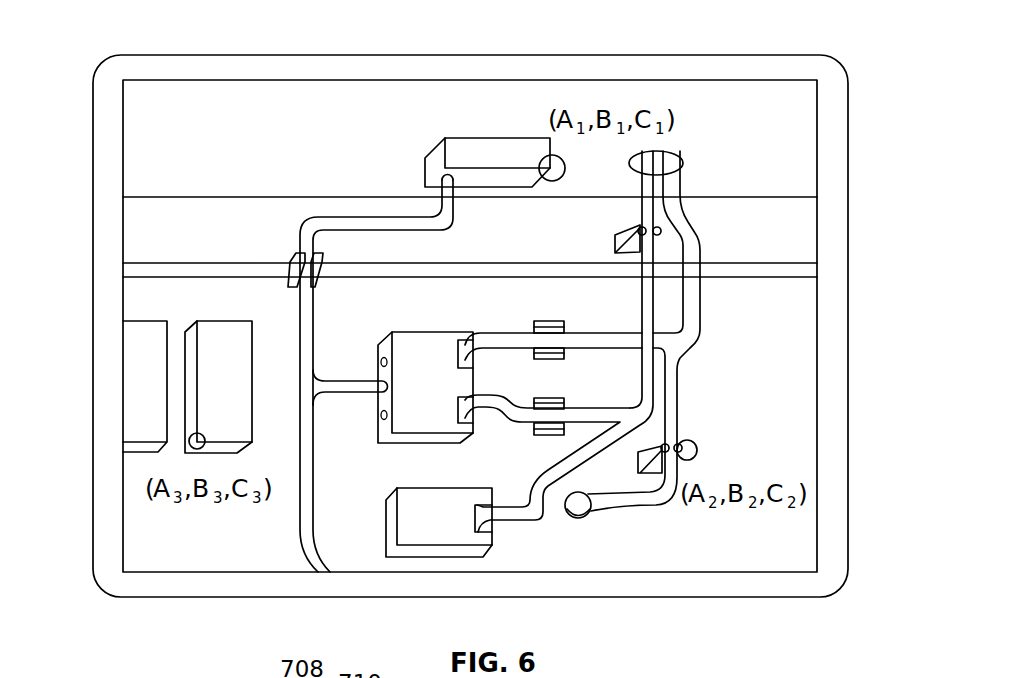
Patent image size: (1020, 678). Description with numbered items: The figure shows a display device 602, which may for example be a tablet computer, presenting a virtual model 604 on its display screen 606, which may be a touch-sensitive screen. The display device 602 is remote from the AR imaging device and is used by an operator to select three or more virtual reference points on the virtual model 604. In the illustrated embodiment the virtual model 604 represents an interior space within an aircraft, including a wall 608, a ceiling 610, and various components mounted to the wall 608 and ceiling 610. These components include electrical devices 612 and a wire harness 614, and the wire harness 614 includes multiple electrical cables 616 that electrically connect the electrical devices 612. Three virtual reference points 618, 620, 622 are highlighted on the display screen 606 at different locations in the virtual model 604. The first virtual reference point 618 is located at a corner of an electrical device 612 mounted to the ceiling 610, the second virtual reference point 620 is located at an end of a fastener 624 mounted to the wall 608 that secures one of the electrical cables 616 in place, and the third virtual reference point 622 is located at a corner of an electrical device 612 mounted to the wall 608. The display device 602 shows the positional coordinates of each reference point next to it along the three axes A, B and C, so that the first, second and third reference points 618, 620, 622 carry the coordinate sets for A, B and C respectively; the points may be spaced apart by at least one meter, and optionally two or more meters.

The display device 602 is at (168, 55).
The virtual model 604 is at (692, 155).
The display screen 606 is at (150, 107).
The wall 608 is at (775, 348).
The ceiling 610 is at (790, 128).
The electrical device 612 is at (475, 150).
The wire harness 614 is at (705, 320).
The electrical cable 616 is at (358, 228).
The first virtual reference point 618 is at (548, 167).
The second virtual reference point 620 is at (697, 449).
The third virtual reference point 622 is at (192, 443).
The fastener 624 is at (650, 460).